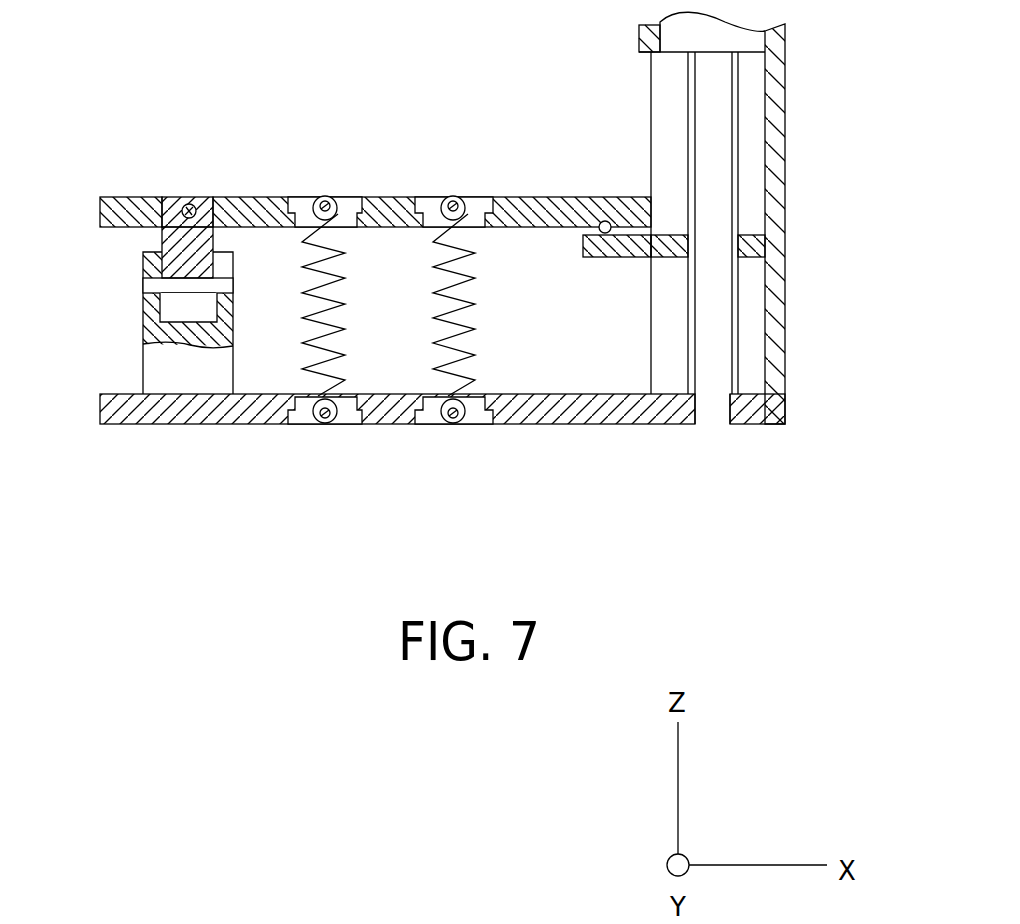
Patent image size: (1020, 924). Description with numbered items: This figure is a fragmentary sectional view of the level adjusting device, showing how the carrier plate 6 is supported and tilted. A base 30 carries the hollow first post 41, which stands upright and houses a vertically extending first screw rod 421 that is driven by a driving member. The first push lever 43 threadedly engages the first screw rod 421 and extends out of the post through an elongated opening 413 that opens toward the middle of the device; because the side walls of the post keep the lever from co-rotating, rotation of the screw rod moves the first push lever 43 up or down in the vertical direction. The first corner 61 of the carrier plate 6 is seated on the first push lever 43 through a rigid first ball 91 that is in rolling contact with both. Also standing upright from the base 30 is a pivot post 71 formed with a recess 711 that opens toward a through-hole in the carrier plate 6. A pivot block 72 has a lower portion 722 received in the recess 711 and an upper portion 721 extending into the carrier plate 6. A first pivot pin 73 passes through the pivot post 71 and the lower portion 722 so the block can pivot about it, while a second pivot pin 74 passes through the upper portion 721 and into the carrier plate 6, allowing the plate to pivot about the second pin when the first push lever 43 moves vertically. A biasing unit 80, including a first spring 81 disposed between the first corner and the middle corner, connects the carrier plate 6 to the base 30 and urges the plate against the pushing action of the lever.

The carrier plate 6 is at (390, 198).
The base 30 is at (547, 426).
The first post 41 is at (754, 255).
The elongated opening 413 is at (762, 180).
The first screw rod 421 is at (710, 303).
The first push lever 43 is at (667, 257).
The first corner 61 is at (613, 197).
The pivot post 71 is at (127, 310).
The recess 711 is at (160, 302).
The pivot block 72 is at (149, 168).
The upper portion 721 is at (181, 200).
The lower portion 722 is at (148, 310).
The first pivot pin 73 is at (155, 283).
The second pivot pin 74 is at (193, 205).
The biasing unit 80 is at (313, 350).
The first spring 81 is at (463, 335).
The first ball 91 is at (604, 221).